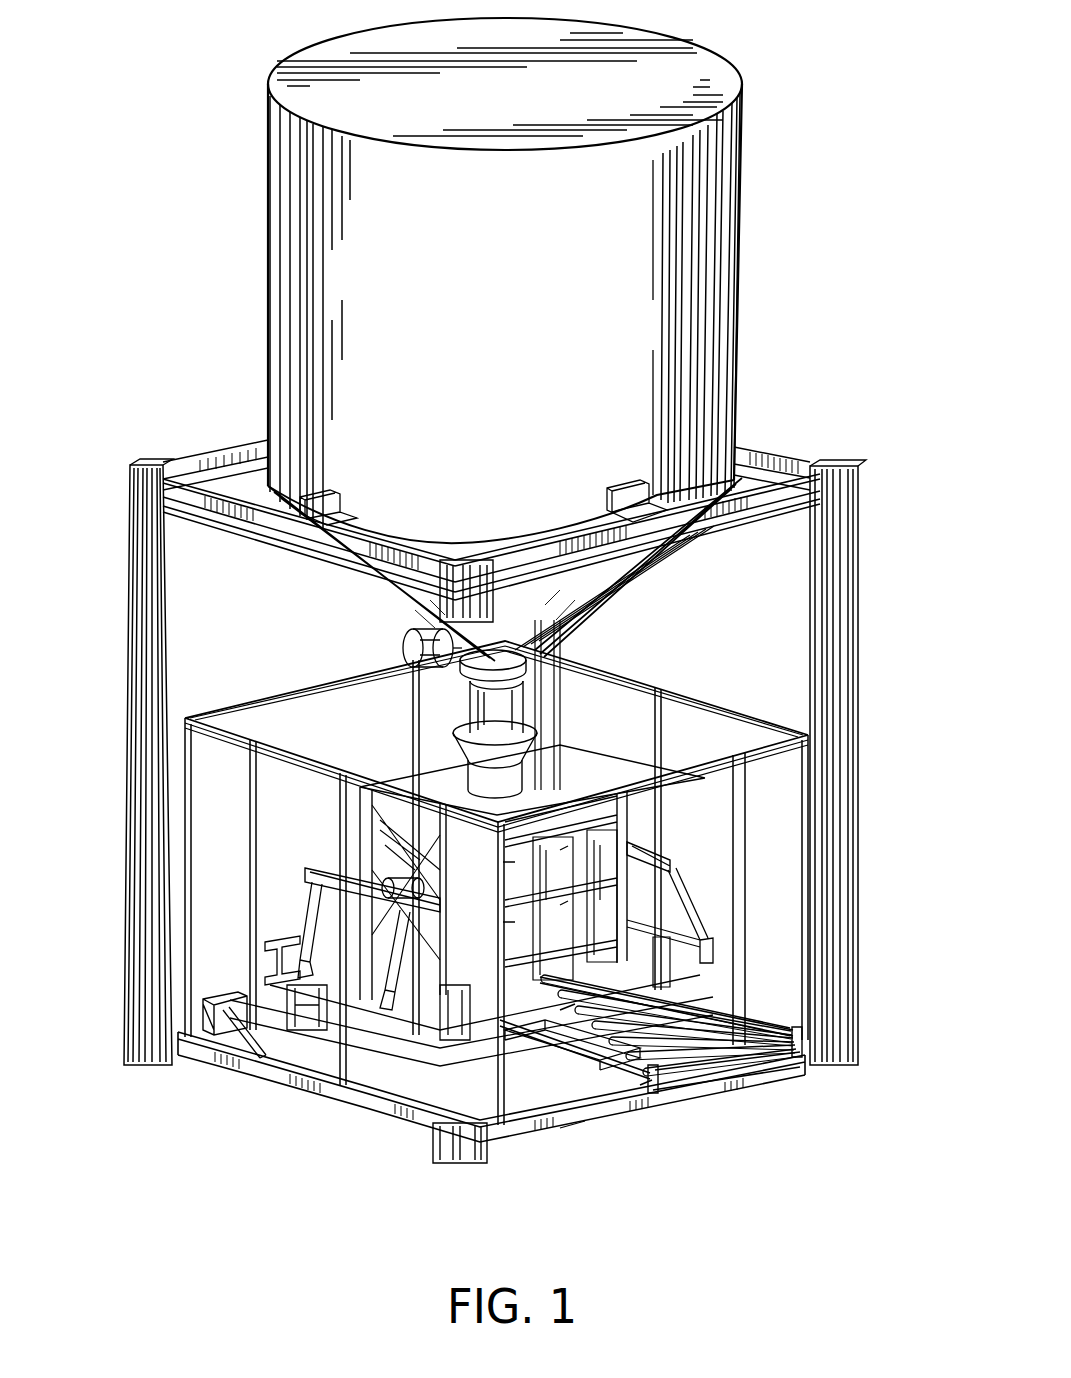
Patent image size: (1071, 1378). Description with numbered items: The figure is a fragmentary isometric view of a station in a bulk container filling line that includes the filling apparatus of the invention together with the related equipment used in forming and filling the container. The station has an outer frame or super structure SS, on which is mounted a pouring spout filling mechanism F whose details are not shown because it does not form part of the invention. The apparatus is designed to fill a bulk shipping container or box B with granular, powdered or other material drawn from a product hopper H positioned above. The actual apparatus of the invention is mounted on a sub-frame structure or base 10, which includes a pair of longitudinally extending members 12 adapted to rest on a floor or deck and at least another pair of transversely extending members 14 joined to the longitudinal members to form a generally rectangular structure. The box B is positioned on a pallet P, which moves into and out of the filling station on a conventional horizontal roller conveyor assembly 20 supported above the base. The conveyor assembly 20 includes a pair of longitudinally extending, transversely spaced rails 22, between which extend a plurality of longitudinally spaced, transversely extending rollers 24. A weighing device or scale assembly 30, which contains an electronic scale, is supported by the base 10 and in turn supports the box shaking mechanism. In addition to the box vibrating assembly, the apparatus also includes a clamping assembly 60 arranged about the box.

The product hopper H is at (735, 297).
The super structure SS is at (857, 564).
The bulk shipping container B is at (403, 768).
The pouring spout filling mechanism F is at (532, 690).
The clamping assembly 60 is at (307, 879).
The transversely extending members 14 is at (270, 1002).
The rails 22 is at (757, 1020).
The rollers 24 is at (727, 1055).
The scale assembly 30 is at (233, 1030).
The longitudinally extending members 12 is at (368, 1097).
The pallet P is at (532, 1097).
The conveyor assembly 20 is at (643, 1092).
The base 10 is at (571, 1122).